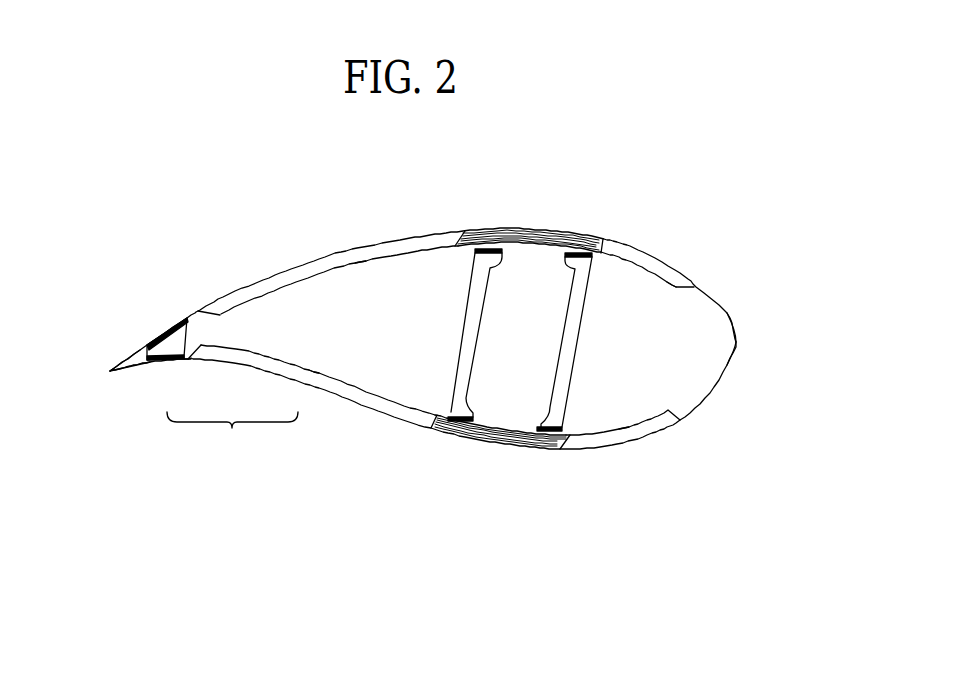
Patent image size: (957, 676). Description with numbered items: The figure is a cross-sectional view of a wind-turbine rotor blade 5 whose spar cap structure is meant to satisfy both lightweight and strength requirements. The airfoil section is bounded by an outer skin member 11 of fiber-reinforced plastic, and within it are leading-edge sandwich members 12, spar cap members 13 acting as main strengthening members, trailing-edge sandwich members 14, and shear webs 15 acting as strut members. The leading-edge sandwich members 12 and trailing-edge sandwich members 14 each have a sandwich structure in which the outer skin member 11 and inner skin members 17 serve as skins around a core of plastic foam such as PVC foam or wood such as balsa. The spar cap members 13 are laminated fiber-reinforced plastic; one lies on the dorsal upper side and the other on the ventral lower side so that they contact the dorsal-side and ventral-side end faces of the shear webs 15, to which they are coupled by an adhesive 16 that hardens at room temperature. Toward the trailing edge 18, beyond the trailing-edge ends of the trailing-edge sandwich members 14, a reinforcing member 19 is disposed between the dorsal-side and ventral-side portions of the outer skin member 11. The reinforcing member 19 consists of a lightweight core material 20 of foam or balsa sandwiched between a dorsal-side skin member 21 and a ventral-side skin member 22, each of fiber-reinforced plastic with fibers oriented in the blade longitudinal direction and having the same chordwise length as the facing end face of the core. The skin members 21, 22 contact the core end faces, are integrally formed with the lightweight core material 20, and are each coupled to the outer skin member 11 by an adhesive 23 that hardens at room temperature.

The wind-turbine rotor blade 5 is at (744, 179).
The outer skin member 11 is at (745, 341).
The leading-edge sandwich member 12 is at (648, 258).
The spar cap member 13 is at (527, 232).
The trailing-edge sandwich member 14 is at (363, 252).
The shear web 15 is at (561, 338).
The adhesive 16 is at (480, 256).
The inner skin member 17 is at (313, 374).
The trailing edge 18 is at (110, 372).
The reinforcing member 19 is at (232, 441).
The lightweight core material 20 is at (179, 343).
The dorsal-side skin member 21 is at (202, 348).
The ventral-side skin member 22 is at (188, 361).
The adhesive 23 is at (158, 331).